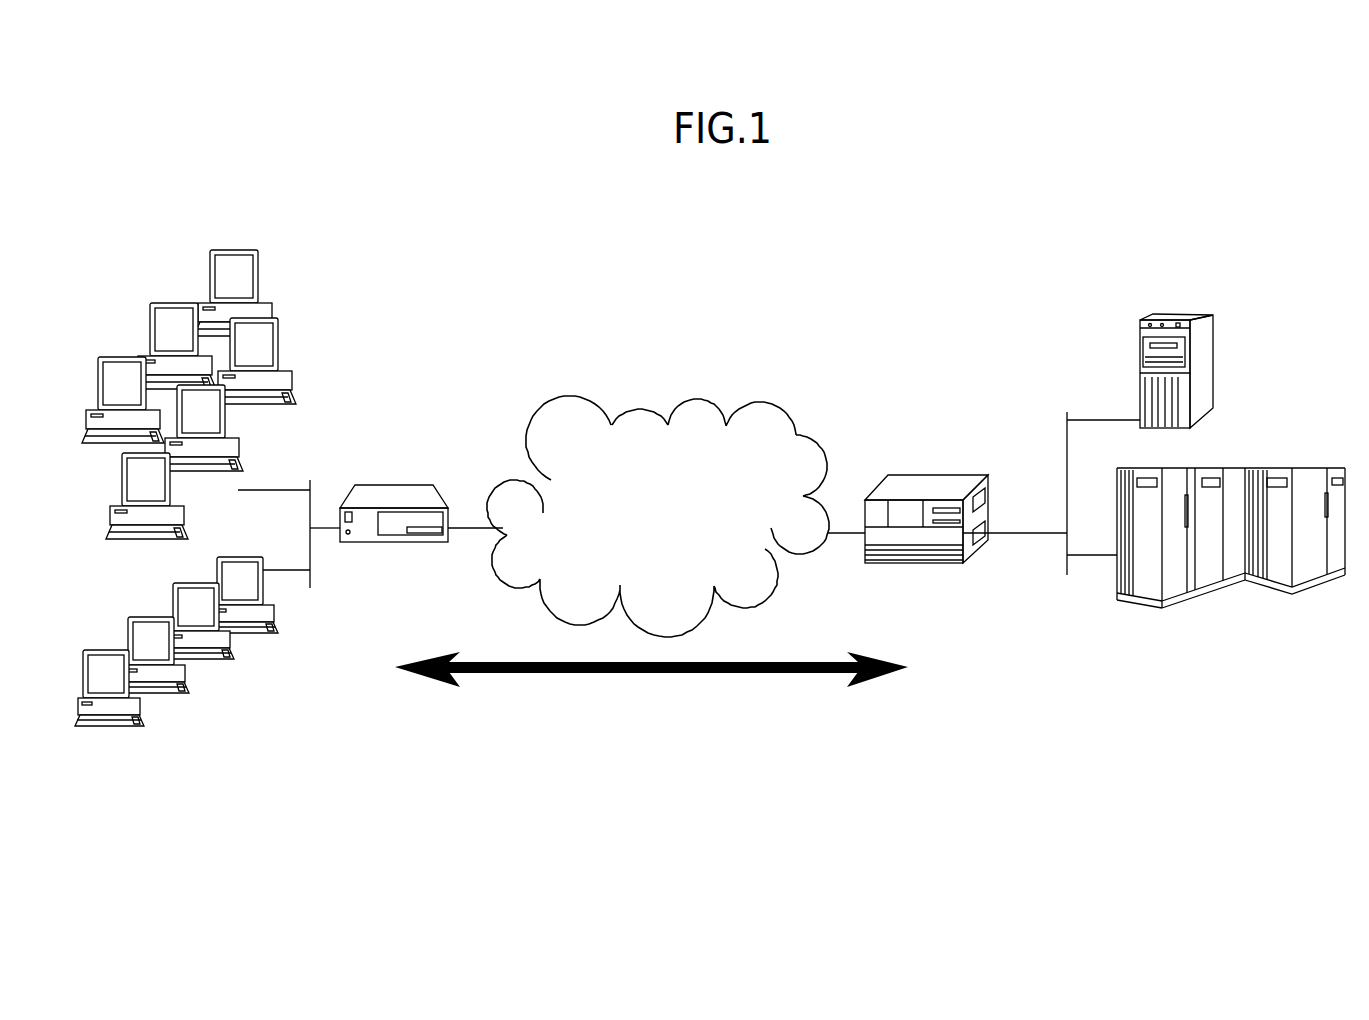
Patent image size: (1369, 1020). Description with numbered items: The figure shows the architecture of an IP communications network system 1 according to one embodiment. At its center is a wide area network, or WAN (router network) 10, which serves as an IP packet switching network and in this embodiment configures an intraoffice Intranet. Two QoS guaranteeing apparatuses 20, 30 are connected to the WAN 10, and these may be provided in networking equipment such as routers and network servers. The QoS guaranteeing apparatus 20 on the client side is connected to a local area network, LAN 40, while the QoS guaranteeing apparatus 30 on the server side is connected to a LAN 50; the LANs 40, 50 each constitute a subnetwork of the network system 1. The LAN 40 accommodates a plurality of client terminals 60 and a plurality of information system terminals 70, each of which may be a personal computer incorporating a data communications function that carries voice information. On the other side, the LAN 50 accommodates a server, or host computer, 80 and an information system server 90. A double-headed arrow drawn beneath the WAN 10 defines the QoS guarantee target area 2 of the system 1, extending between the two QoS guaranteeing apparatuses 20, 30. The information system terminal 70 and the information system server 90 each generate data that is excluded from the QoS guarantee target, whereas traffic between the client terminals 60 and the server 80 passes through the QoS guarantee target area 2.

The IP communications network system 1 is at (551, 231).
The QoS guarantee target area 2 is at (651, 682).
The wide area network (WAN: router network) 10 is at (695, 410).
The QoS guaranteeing apparatus 20 is at (392, 488).
The QoS guaranteeing apparatus 30 is at (925, 477).
The local area network (LAN) 40 is at (273, 490).
The LAN 50 is at (1018, 537).
The client terminal 60 is at (172, 302).
The information system terminal 70 is at (163, 692).
The server (host computer) 80 is at (1195, 597).
The information system server 90 is at (1180, 317).